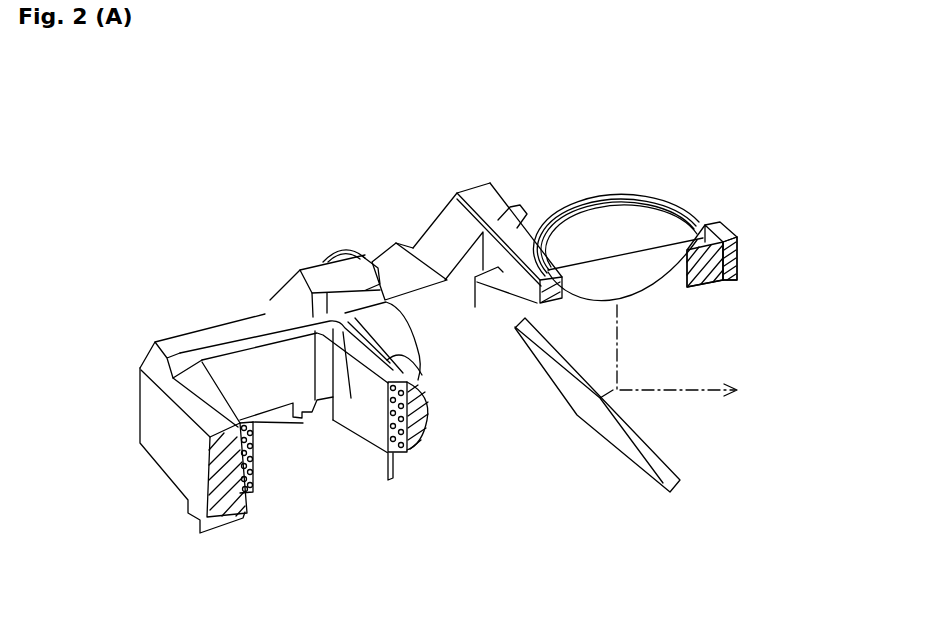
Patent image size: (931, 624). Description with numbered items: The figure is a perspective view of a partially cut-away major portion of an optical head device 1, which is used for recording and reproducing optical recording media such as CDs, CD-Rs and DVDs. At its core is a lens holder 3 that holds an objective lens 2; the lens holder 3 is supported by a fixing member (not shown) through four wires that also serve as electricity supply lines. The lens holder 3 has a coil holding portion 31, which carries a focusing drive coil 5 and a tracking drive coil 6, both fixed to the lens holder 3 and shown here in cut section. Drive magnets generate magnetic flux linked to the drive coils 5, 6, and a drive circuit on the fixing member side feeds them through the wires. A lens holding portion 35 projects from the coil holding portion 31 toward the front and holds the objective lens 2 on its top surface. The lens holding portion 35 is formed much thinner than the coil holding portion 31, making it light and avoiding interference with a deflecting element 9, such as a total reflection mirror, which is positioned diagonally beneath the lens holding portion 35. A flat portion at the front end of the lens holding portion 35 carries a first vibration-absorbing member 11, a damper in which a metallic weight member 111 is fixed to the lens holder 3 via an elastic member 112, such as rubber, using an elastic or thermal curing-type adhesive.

The optical head device 1 is at (252, 234).
The objective lens 2 is at (623, 223).
The lens holder 3 is at (530, 105).
The coil holding portion 31 is at (309, 298).
The lens holding portion 35 is at (535, 178).
The focusing drive coil 5 is at (357, 388).
The tracking drive coil 6 is at (407, 347).
The deflecting element 9 is at (615, 437).
The first vibration-absorbing member 11 is at (835, 284).
The metallic weight member 111 is at (740, 266).
The elastic member 112 is at (730, 290).